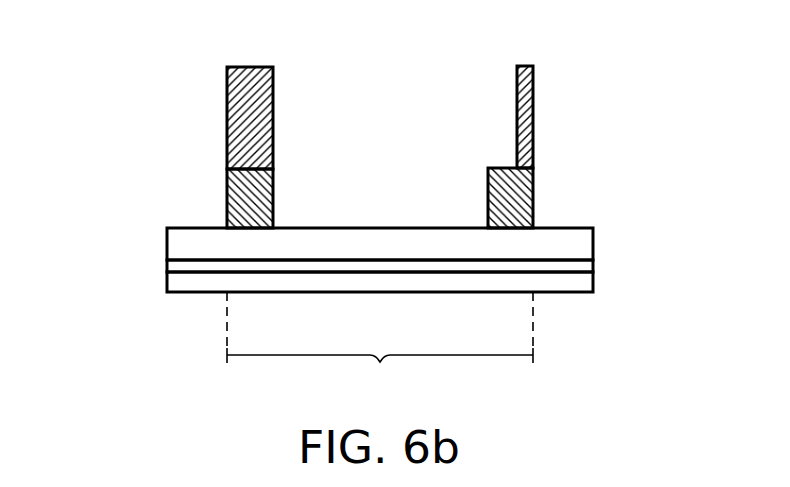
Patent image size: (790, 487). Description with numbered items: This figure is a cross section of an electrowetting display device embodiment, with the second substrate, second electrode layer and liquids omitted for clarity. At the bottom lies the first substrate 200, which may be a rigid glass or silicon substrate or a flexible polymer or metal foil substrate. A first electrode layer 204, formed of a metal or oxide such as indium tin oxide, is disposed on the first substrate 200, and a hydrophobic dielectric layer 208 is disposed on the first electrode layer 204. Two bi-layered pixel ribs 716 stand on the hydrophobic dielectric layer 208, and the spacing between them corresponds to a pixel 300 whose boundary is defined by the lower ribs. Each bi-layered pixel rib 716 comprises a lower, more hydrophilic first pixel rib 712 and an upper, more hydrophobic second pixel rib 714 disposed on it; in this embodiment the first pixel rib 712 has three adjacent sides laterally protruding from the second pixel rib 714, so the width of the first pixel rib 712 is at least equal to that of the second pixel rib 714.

The first substrate 200 is at (172, 282).
The first electrode layer 204 is at (172, 266).
The hydrophobic dielectric layer 208 is at (173, 244).
The first pixel rib 712 is at (237, 196).
The second pixel rib 714 is at (232, 142).
The bi-layered pixel rib 716 is at (380, 147).
The pixel 300 is at (380, 346).